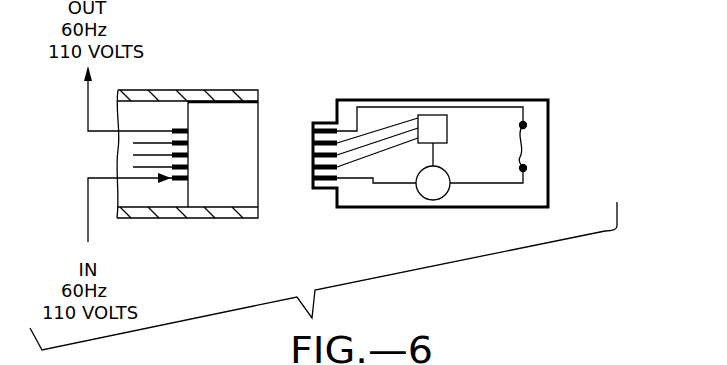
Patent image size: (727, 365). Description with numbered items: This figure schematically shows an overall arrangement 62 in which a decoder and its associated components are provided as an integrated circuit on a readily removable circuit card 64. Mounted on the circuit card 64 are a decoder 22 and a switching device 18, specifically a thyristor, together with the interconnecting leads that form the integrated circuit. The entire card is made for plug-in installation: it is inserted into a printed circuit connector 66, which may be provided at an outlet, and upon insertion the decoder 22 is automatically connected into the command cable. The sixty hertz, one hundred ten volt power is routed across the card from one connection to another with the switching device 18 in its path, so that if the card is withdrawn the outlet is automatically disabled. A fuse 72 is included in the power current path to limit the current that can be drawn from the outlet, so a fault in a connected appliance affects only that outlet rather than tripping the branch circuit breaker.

The printed circuit connector 66 is at (200, 95).
The overall arrangement 62 is at (566, 89).
The circuit card 64 is at (540, 192).
The fuse 72 is at (520, 138).
The decoder 22 is at (447, 132).
The switching device 18 is at (422, 200).